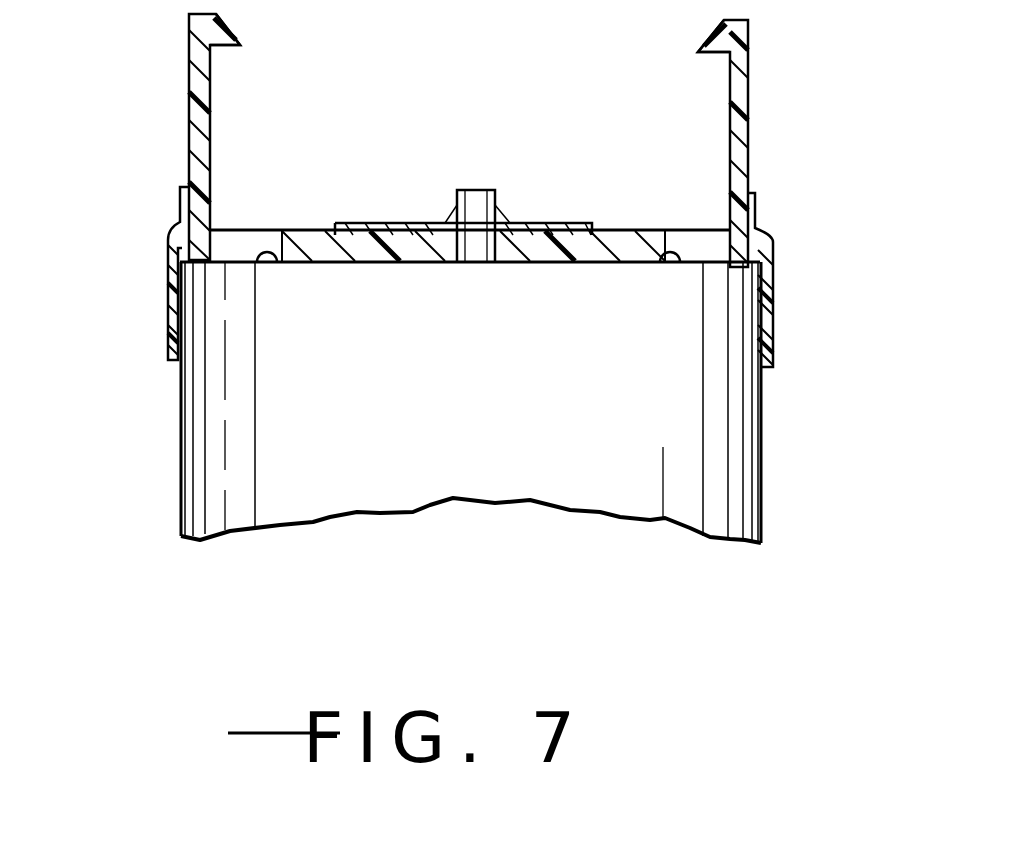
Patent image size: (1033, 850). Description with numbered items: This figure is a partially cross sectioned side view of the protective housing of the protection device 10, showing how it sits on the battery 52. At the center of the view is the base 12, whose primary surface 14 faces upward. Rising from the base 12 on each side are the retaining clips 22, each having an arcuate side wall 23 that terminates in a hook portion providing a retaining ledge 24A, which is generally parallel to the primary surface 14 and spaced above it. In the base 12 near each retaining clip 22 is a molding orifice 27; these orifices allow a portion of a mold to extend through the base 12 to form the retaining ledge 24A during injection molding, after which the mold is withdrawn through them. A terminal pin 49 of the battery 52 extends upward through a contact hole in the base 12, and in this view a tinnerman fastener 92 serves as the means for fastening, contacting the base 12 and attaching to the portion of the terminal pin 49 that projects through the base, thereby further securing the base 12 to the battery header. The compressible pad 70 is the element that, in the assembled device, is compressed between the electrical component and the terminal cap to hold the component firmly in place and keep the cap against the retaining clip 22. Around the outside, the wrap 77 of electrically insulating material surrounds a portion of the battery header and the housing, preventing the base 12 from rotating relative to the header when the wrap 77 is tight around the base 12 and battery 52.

The protection device 10 is at (792, 144).
The base 12 is at (372, 265).
The primary surface 14 is at (320, 228).
The retaining clip 22 is at (203, 47).
The arcuate side wall 23 is at (212, 140).
The retaining ledge 24A is at (216, 46).
The molding orifice 27 is at (266, 272).
The terminal pin 49 is at (477, 265).
The battery 52 is at (610, 421).
The compressible pad 70 is at (738, 90).
The wrap 77 is at (172, 318).
The tinnerman fastener 92 is at (536, 222).